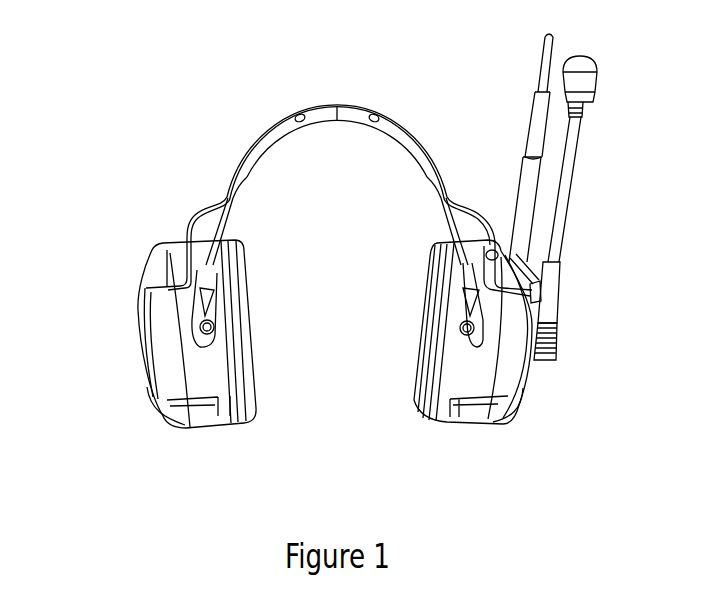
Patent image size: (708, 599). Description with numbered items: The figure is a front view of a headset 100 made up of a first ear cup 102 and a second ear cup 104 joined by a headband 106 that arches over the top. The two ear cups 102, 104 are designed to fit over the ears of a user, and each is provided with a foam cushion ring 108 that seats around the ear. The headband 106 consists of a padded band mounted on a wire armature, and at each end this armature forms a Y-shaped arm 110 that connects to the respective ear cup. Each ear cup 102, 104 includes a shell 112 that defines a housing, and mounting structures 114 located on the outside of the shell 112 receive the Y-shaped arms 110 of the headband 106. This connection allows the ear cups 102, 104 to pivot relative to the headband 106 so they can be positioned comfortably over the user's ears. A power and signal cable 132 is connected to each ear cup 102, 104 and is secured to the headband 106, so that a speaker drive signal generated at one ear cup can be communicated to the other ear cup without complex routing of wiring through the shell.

The headset 100 is at (202, 103).
The first ear cup 102 is at (523, 428).
The second ear cup 104 is at (137, 383).
The headband 106 is at (302, 103).
The foam cushion ring 108 is at (258, 390).
The Y-shaped arm 110 is at (210, 230).
The shell 112 is at (503, 365).
The mounting structure 114 is at (468, 340).
The power and signal cable 132 is at (473, 208).